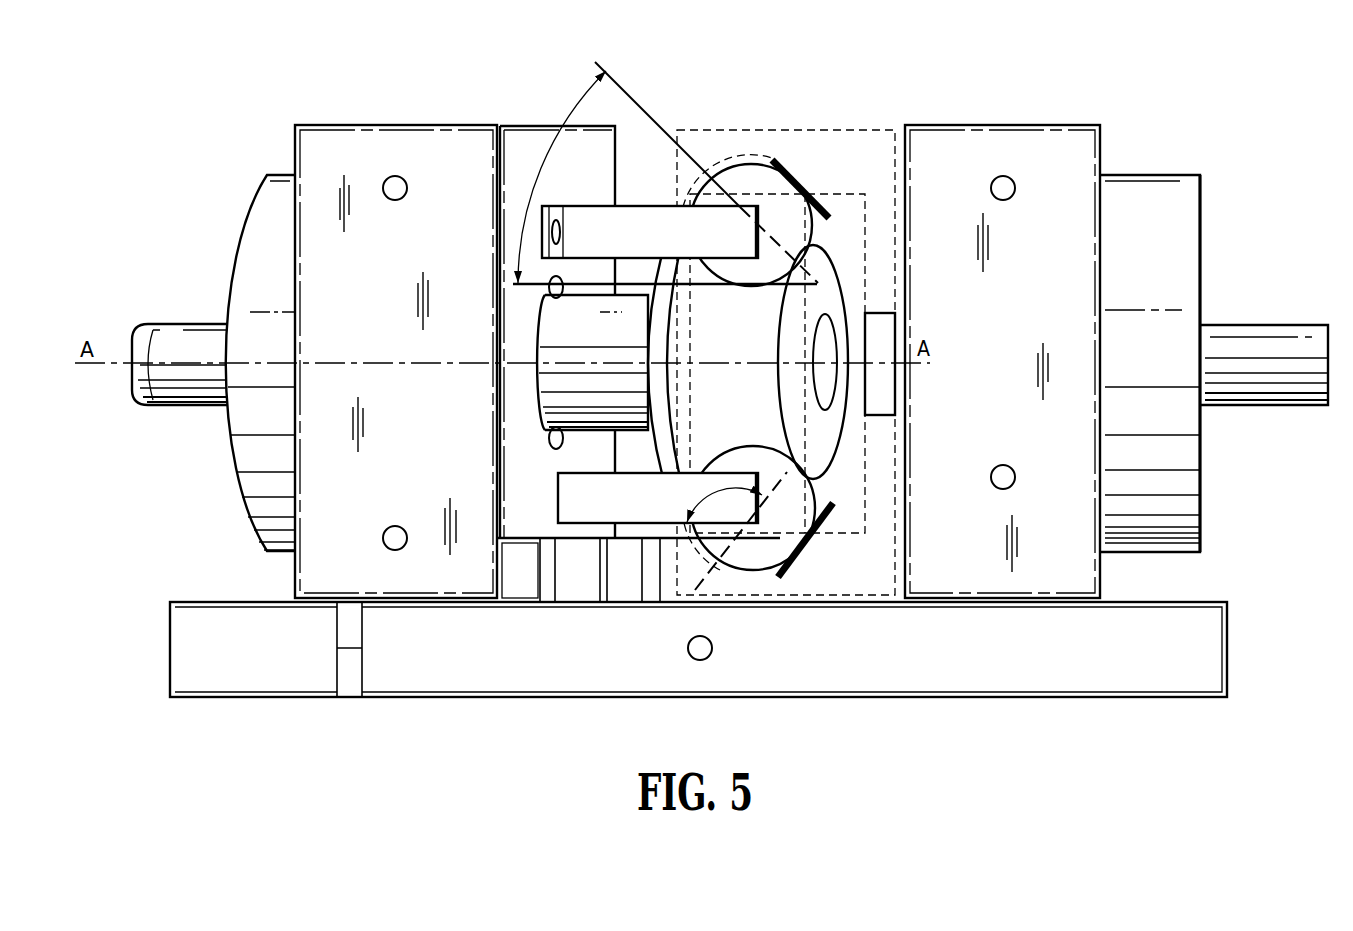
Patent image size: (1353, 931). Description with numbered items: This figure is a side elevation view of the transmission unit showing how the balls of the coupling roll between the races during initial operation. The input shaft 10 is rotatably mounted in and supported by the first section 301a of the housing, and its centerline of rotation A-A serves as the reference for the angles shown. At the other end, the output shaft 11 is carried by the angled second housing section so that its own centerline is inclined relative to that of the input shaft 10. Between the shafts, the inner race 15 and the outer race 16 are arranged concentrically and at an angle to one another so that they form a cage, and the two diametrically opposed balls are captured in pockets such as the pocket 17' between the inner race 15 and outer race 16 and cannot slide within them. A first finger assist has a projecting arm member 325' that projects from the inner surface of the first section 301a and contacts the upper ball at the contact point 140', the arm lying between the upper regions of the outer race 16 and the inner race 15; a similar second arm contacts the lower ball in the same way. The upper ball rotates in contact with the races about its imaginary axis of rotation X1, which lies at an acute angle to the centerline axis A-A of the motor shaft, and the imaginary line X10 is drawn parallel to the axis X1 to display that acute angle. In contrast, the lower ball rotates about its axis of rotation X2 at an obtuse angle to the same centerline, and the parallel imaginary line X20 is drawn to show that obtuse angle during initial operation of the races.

The first section 301a is at (335, 178).
The input shaft 10 is at (156, 366).
The projecting arm member 325' is at (650, 203).
The pocket 17' is at (822, 188).
The contact point 140' is at (826, 225).
The outer race 16 is at (852, 162).
The line X10 is at (806, 190).
The line X20 is at (810, 543).
The axis of rotation X1 is at (820, 283).
The axis of rotation X2 is at (715, 569).
The output shaft 11 is at (893, 381).
The inner race 15 is at (837, 422).